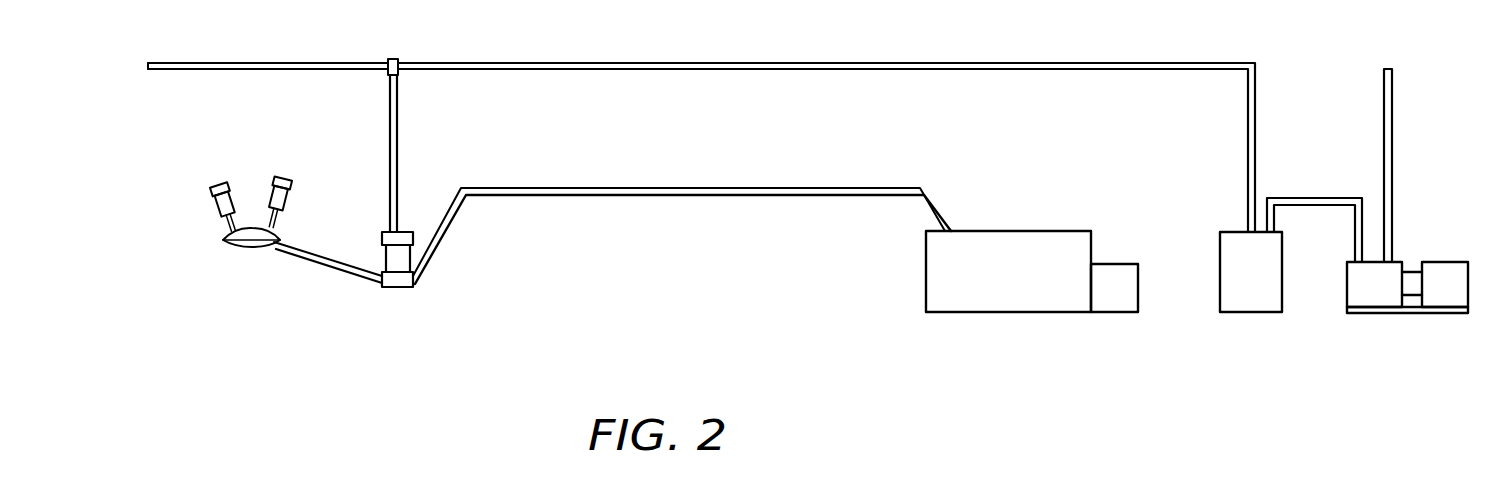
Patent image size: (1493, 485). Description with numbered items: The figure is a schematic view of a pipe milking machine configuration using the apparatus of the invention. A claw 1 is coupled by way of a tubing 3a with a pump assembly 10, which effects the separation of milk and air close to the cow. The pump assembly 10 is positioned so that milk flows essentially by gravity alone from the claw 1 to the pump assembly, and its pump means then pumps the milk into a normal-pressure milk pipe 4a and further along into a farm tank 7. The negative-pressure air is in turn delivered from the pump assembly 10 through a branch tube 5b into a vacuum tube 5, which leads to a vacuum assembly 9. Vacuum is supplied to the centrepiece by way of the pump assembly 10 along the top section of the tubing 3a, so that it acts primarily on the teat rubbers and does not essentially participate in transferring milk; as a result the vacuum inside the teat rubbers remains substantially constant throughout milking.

The claw 1 is at (235, 243).
The tubing 3a is at (298, 262).
The normal-pressure milk pipe 4a is at (635, 188).
The vacuum tube 5 is at (578, 63).
The tube 5b is at (397, 130).
The farm tank 7 is at (962, 296).
The vacuum assembly 9 is at (1312, 303).
The pump assembly 10 is at (397, 283).